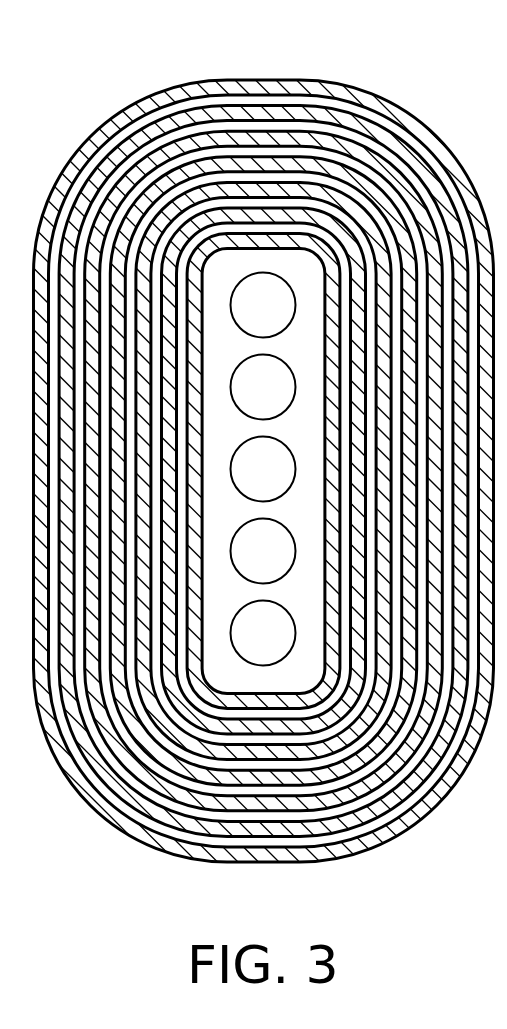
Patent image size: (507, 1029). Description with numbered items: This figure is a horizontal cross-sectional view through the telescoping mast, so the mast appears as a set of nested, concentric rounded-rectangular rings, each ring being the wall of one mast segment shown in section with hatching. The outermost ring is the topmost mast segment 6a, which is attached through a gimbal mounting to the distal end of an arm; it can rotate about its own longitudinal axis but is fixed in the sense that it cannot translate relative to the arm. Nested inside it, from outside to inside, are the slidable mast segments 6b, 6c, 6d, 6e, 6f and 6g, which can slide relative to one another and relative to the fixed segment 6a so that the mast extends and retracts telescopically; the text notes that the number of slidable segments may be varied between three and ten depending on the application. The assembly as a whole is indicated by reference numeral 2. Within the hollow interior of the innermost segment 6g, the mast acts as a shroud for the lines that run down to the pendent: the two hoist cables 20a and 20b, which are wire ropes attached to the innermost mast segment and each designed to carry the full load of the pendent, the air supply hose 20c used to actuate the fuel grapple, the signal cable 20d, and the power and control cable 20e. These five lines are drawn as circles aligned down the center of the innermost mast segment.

The coil assembly 2 is at (270, 451).
The topmost mast segment 6a is at (218, 86).
The slidable mast segment 6b is at (161, 128).
The slidable mast segment 6c is at (128, 175).
The slidable mast segment 6d is at (215, 783).
The slidable mast segment 6e is at (183, 750).
The slidable mast segment 6f is at (182, 712).
The slidable mast segment 6g is at (250, 696).
The hoist cable 20a is at (240, 562).
The hoist cable 20b is at (240, 398).
The air supply hose 20c is at (240, 480).
The signal cable 20d is at (240, 644).
The power and control cable 20e is at (240, 316).